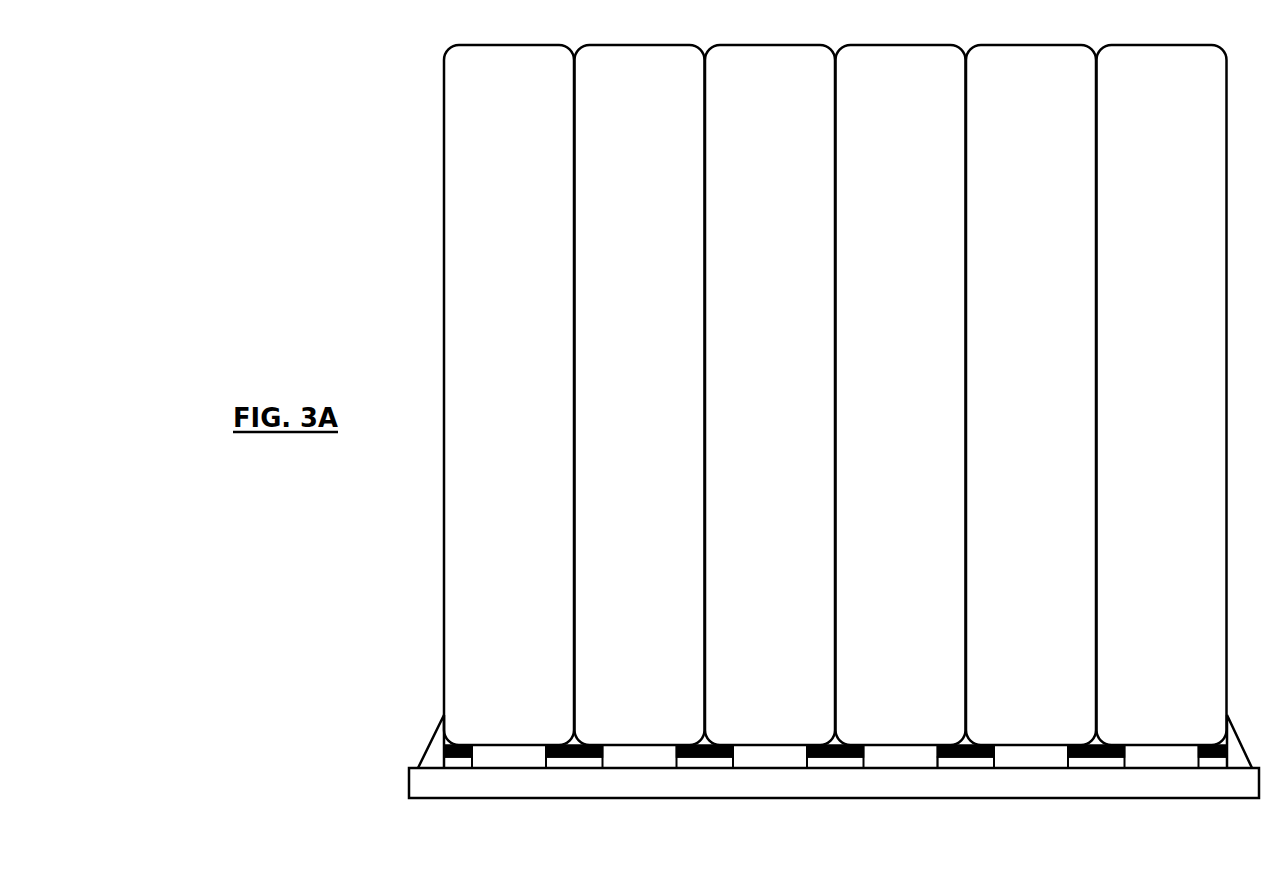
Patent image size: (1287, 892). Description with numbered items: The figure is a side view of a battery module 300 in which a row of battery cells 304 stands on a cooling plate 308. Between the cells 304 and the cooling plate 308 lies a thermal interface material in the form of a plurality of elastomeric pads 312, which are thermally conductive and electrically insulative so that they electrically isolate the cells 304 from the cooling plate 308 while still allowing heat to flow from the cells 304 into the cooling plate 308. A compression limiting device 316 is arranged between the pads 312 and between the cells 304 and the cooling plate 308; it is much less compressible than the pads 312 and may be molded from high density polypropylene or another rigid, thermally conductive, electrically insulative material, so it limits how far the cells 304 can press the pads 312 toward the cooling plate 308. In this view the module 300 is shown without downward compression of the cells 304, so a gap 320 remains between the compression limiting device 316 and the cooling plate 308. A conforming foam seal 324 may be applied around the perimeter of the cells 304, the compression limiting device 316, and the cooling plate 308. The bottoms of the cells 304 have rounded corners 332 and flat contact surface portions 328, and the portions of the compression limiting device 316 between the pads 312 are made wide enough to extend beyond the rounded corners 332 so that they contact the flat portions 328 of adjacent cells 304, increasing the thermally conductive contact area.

The battery module 300 is at (313, 87).
The battery cells 304 is at (443, 252).
The cooling plate 308 is at (408, 783).
The elastomeric pads 312 is at (634, 756).
The compression limiting device 316 is at (831, 758).
The gap 320 is at (967, 765).
The conforming foam seal 324 is at (428, 743).
The flat contact surface portions 328 is at (780, 743).
The rounded corners 332 is at (832, 743).